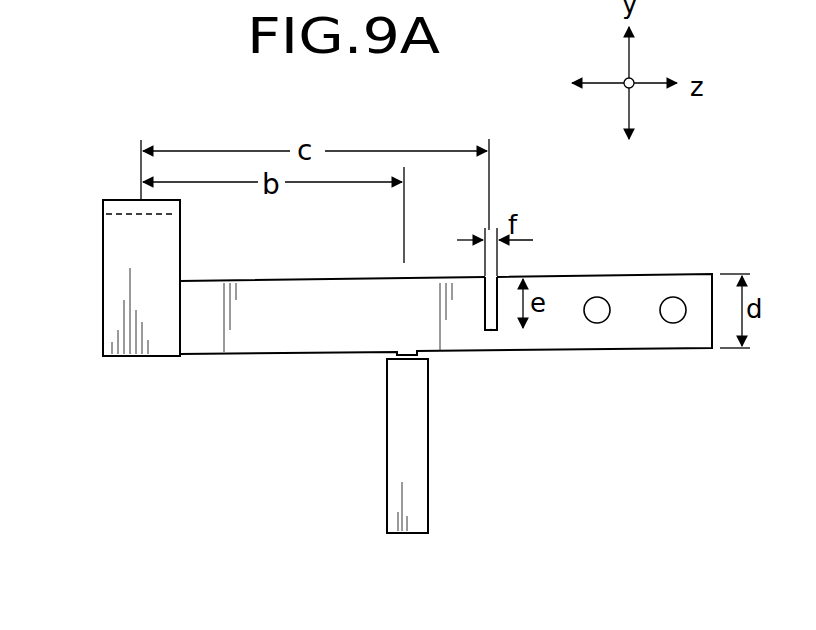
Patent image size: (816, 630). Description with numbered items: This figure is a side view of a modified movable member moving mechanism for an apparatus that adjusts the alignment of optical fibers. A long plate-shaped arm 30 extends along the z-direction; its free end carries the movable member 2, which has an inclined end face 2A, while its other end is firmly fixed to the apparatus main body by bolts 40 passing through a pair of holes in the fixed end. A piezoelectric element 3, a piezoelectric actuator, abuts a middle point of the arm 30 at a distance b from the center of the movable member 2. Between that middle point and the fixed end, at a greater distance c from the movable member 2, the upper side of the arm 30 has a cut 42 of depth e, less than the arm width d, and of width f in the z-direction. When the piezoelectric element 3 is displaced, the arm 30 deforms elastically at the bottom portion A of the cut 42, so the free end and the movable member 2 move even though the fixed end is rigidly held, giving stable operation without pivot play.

The movable member 2 is at (145, 327).
The inclined end face 2A is at (130, 213).
The arm 30 is at (282, 280).
The cut 42 is at (500, 290).
The bottom portion of the cut A is at (492, 333).
The bolts 40 is at (600, 316).
The piezoelectric element 3 is at (424, 490).